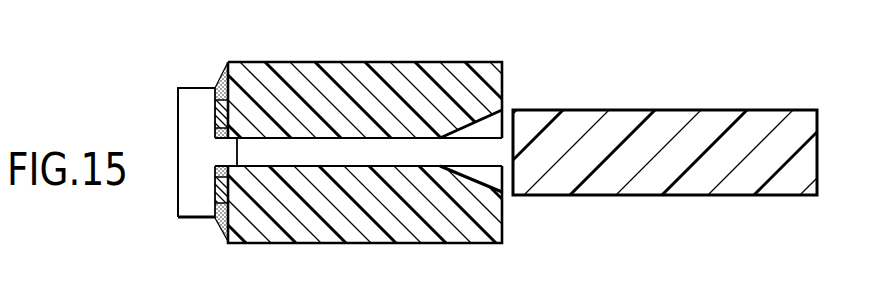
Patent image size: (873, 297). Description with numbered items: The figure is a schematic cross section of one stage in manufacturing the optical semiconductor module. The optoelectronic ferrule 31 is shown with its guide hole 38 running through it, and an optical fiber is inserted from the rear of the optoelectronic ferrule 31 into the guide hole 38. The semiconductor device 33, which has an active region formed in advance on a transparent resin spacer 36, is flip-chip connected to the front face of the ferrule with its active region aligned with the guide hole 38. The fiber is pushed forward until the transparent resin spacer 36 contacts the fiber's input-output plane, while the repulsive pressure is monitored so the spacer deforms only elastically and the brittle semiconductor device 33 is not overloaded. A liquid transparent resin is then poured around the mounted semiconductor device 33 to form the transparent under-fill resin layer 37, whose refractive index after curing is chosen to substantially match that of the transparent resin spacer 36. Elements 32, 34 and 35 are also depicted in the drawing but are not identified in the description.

The optoelectronic ferrule 31 is at (356, 74).
The sealing ring 32 is at (216, 107).
The semiconductor device 33 is at (181, 124).
The bore 34 is at (406, 140).
The rod 35 is at (686, 116).
The transparent resin spacer 36 is at (223, 153).
The transparent under-fill resin layer 37 is at (217, 222).
The guide hole 38 is at (486, 128).